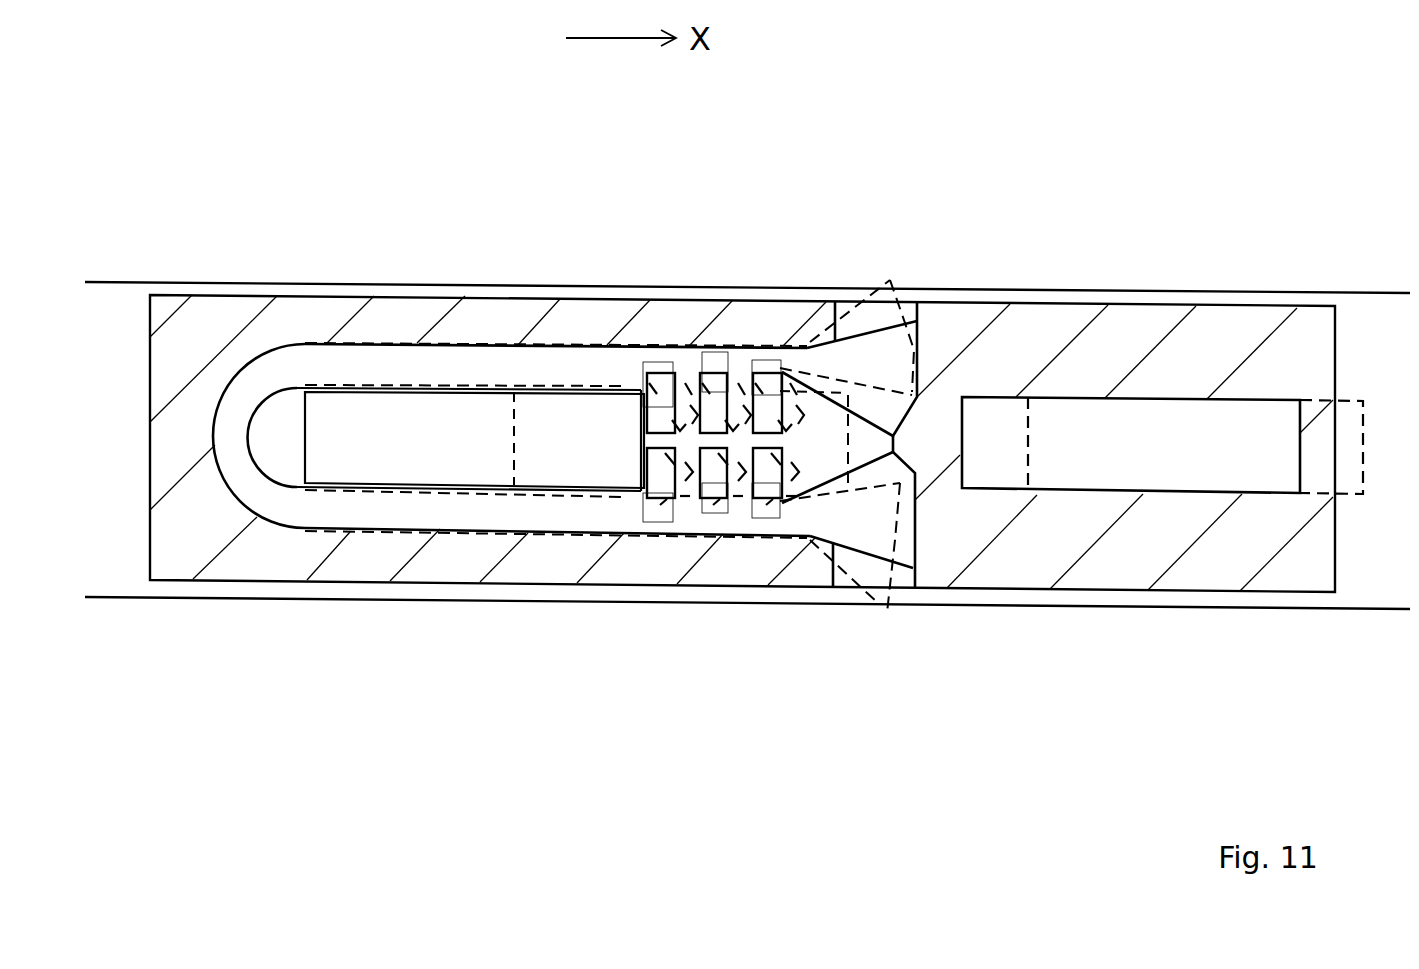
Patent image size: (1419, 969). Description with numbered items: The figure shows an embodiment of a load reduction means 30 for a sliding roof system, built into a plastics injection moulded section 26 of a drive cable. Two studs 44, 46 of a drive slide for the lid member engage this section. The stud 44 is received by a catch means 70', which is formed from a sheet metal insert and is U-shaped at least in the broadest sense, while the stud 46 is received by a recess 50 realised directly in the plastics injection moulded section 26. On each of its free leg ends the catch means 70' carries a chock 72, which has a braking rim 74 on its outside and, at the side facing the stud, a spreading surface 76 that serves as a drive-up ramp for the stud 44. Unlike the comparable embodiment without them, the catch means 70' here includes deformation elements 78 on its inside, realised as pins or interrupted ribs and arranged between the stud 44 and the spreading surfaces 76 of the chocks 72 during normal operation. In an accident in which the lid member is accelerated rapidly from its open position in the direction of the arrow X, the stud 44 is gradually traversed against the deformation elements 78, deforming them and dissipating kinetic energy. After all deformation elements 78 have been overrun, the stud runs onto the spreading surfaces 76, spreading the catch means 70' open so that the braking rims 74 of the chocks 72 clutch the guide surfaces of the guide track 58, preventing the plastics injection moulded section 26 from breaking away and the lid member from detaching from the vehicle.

The plastics injection moulded section 26 is at (1023, 347).
The load reduction means 30 is at (149, 507).
The stud 44 is at (458, 452).
The stud 46 is at (1130, 455).
The recess 50 is at (1020, 492).
The guide track 58 is at (114, 282).
The catch means 70' is at (511, 526).
The chock 72 is at (858, 357).
The braking rim 74 is at (917, 303).
The spreading surface 76 is at (817, 393).
The deformation elements 78 is at (767, 405).